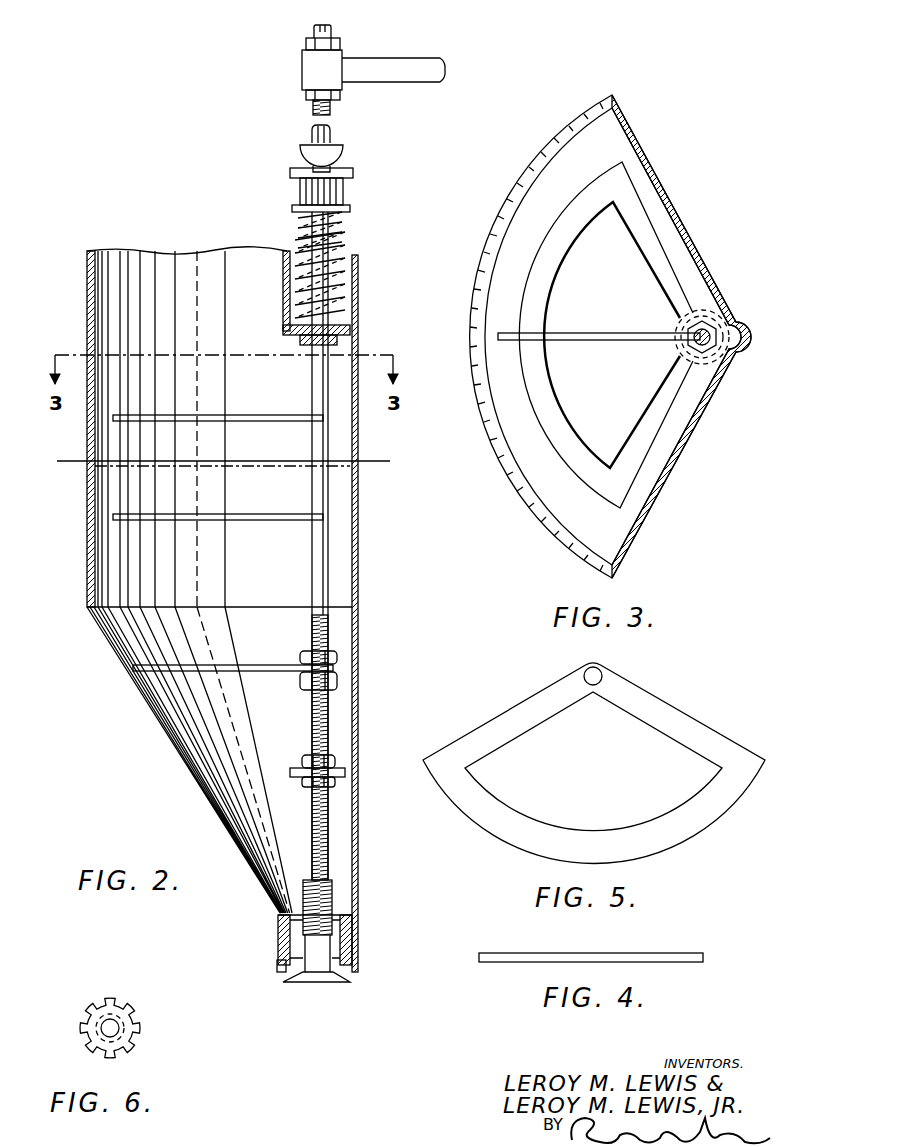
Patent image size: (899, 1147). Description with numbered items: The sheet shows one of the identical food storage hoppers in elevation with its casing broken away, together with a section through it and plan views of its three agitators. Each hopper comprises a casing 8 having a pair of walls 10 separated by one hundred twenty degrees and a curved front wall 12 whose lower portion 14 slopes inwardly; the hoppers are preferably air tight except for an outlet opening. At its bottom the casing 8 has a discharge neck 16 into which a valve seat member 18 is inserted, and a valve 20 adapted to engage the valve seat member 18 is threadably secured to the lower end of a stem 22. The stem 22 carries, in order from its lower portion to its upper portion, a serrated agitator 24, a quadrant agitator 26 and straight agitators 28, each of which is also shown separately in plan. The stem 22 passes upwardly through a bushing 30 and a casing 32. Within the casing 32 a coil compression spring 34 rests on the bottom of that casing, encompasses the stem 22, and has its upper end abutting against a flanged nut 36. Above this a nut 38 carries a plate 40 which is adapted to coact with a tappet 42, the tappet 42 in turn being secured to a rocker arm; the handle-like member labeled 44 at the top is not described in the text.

In FIG. 2, the casing 8 is at (106, 678).
In FIG. 3, the casing 8 is at (672, 523).
In FIG. 2, the walls 10 is at (358, 303).
In FIG. 3, the walls 10 is at (672, 212).
In FIG. 2, the curved front wall 12 is at (87, 302).
In FIG. 3, the curved front wall 12 is at (474, 322).
In FIG. 2, the inwardly sloping lower portion 14 is at (197, 786).
In FIG. 2, the discharge neck 16 is at (278, 946).
In FIG. 2, the valve seat member 18 is at (355, 944).
In FIG. 2, the valve 20 is at (333, 983).
In FIG. 2, the stem 22 is at (311, 850).
In FIG. 3, the stem 22 is at (712, 331).
In FIG. 2, the serrated agitator 24 is at (290, 771).
In FIG. 6, the serrated agitator 24 is at (130, 1022).
In FIG. 3, the serrated agitator 24 is at (738, 343).
In FIG. 2, the quadrant agitator 26 is at (249, 665).
In FIG. 3, the quadrant agitator 26 is at (578, 204).
In FIG. 5, the quadrant agitator 26 is at (688, 725).
In FIG. 2, the straight agitators 28 is at (245, 421).
In FIG. 3, the straight agitators 28 is at (588, 333).
In FIG. 4, the straight agitators 28 is at (583, 960).
In FIG. 2, the bushing 30 is at (300, 340).
In FIG. 2, the casing 32 is at (284, 296).
In FIG. 2, the coil compression spring 34 is at (346, 231).
In FIG. 2, the flanged nut 36 is at (350, 208).
In FIG. 2, the nut 38 is at (344, 186).
In FIG. 2, the plate 40 is at (344, 160).
In FIG. 2, the tappet 42 is at (331, 136).
In FIG. 2, the handle head 44 is at (432, 68).